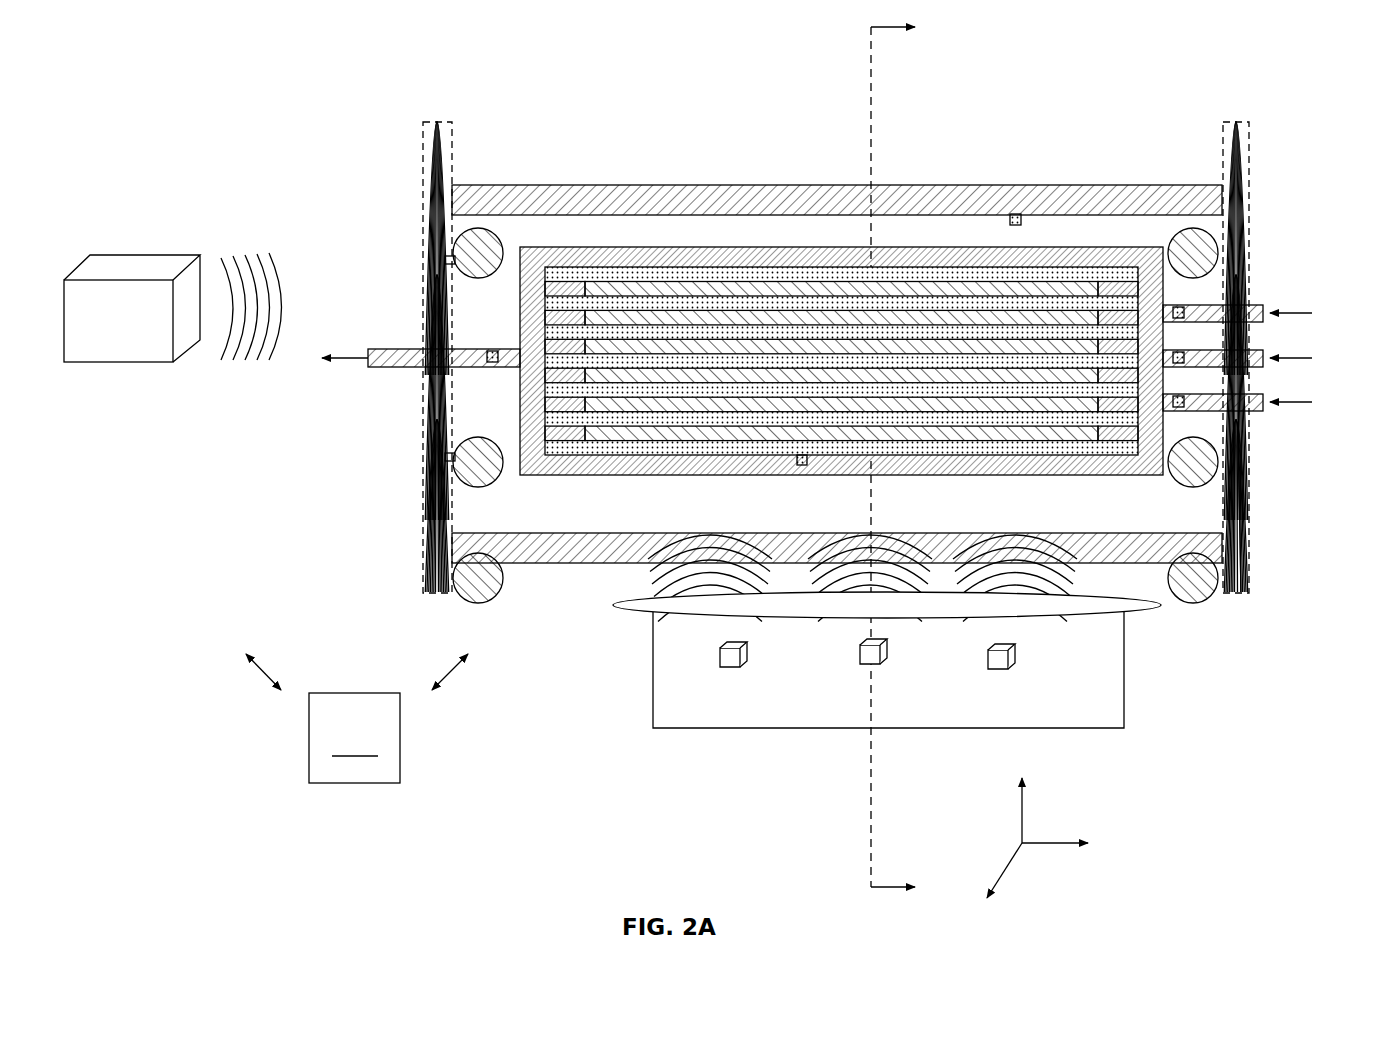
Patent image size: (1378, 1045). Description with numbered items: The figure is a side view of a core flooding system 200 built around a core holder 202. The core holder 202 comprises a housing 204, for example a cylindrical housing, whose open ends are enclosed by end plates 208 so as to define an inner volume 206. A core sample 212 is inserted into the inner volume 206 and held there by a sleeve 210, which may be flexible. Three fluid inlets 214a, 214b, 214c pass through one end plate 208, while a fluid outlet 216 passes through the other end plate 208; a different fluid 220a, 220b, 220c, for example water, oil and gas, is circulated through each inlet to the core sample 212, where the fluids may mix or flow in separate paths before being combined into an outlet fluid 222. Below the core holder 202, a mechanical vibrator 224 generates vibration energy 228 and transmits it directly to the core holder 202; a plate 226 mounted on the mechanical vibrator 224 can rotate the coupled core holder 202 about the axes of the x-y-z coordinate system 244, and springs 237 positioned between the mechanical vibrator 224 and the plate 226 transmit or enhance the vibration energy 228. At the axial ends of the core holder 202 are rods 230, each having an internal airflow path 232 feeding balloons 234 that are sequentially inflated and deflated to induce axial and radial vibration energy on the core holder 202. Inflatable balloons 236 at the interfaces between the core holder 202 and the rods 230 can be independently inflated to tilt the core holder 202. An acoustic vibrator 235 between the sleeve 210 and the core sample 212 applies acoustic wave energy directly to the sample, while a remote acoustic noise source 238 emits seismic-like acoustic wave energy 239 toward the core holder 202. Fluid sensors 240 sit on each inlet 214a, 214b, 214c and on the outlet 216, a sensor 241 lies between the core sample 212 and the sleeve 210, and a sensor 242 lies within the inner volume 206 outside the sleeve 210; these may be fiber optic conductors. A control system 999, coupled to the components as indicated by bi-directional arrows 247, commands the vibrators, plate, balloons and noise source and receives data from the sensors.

The core flooding system 200 is at (262, 66).
The core holder 202 is at (890, 120).
The housing 204 is at (810, 185).
The inner volume 206 is at (767, 232).
The end plate 208 is at (530, 247).
The sleeve 210 is at (841, 295).
The core sample 212 is at (612, 337).
The fluid inlet 214a is at (1262, 305).
The fluid inlet 214b is at (1263, 350).
The fluid inlet 214c is at (1260, 411).
The fluid outlet 216 is at (400, 368).
The fluid 220a is at (1302, 312).
The fluid 220b is at (1292, 360).
The fluid 220c is at (1302, 404).
The outlet fluid 222 is at (368, 362).
The mechanical vibrator 224 is at (750, 732).
The plate 226 is at (626, 610).
The vibration energy 228 is at (643, 575).
The rod 230 is at (836, 357).
The airflow path 232 is at (440, 296).
The balloon 234 is at (440, 256).
The acoustic vibrator 235 is at (893, 247).
The inflatable balloon 236 is at (490, 602).
The spring 237 is at (722, 658).
The acoustic noise source 238 is at (117, 364).
The acoustic wave energy 239 is at (249, 368).
The fluid sensor 240 is at (492, 348).
The sensor 241 is at (803, 468).
The sensor 242 is at (1016, 212).
The x-y-z coordinate system 244 is at (1044, 822).
The bi-directional arrows 247 is at (268, 670).
The control system 999 is at (354, 738).